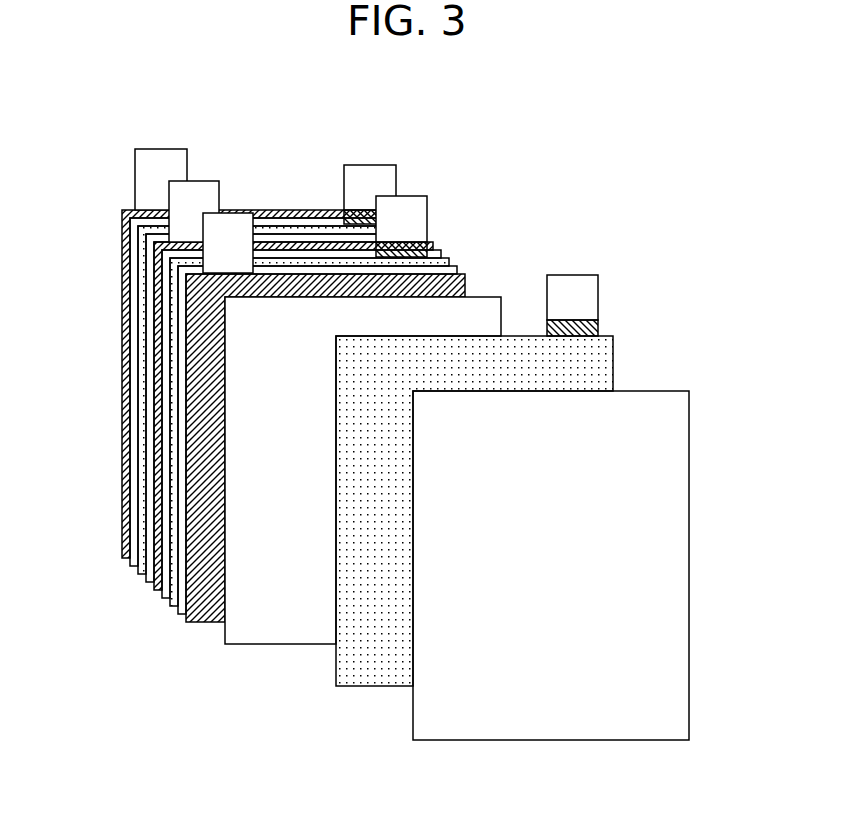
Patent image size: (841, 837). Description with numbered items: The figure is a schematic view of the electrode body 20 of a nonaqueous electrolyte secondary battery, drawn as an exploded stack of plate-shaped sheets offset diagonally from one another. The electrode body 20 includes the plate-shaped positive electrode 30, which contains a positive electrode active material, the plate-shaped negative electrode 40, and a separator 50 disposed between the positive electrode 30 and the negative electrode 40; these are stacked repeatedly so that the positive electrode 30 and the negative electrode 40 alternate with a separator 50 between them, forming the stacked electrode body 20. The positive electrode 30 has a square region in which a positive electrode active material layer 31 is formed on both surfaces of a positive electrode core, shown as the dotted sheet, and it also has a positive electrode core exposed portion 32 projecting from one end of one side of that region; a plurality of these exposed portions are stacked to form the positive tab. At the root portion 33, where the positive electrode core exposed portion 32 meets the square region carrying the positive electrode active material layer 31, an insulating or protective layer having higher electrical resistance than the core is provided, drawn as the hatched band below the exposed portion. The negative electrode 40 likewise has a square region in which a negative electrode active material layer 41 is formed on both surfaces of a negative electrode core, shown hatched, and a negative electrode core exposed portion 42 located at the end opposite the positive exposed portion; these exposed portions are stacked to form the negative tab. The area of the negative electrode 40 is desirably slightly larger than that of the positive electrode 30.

The electrode body 20 is at (478, 83).
The positive electrode 30 is at (177, 612).
The positive electrode active material layer 31 is at (605, 363).
The positive electrode core exposed portion 32 is at (588, 288).
The root portion 33 is at (595, 327).
The negative electrode 40 is at (158, 593).
The negative electrode active material layer 41 is at (122, 237).
The negative electrode core exposed portion 42 is at (160, 155).
The separator 50 is at (168, 601).